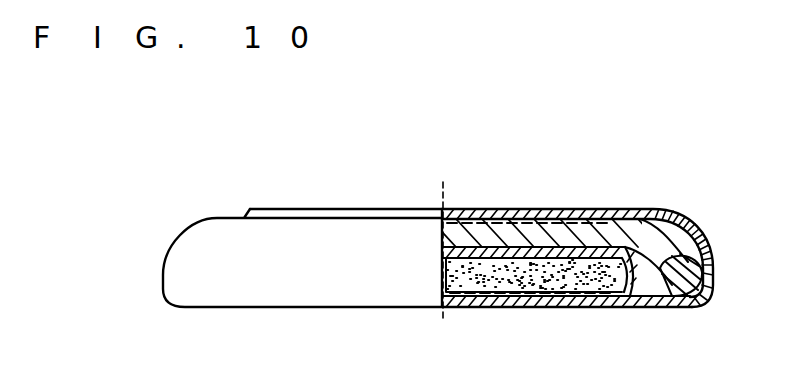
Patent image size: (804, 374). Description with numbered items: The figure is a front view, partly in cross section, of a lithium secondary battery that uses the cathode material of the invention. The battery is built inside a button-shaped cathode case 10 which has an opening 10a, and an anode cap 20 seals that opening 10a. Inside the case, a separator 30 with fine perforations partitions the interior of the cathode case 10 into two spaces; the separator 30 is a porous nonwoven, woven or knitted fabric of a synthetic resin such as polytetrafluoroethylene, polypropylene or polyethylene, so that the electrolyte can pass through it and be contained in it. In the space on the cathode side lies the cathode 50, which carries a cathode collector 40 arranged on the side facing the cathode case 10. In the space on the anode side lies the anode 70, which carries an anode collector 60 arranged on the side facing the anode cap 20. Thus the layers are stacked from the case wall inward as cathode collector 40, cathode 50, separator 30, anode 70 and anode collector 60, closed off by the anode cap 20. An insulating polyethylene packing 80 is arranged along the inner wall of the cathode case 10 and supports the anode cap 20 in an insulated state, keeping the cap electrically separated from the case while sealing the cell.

The cathode case 10 is at (336, 292).
The opening 10a is at (637, 210).
The anode cap 20 is at (626, 209).
The separator 30 is at (625, 307).
The cathode collector 40 is at (492, 307).
The cathode 50 is at (528, 310).
The anode collector 60 is at (577, 210).
The anode 70 is at (532, 210).
The insulating polyethylene packing 80 is at (700, 272).